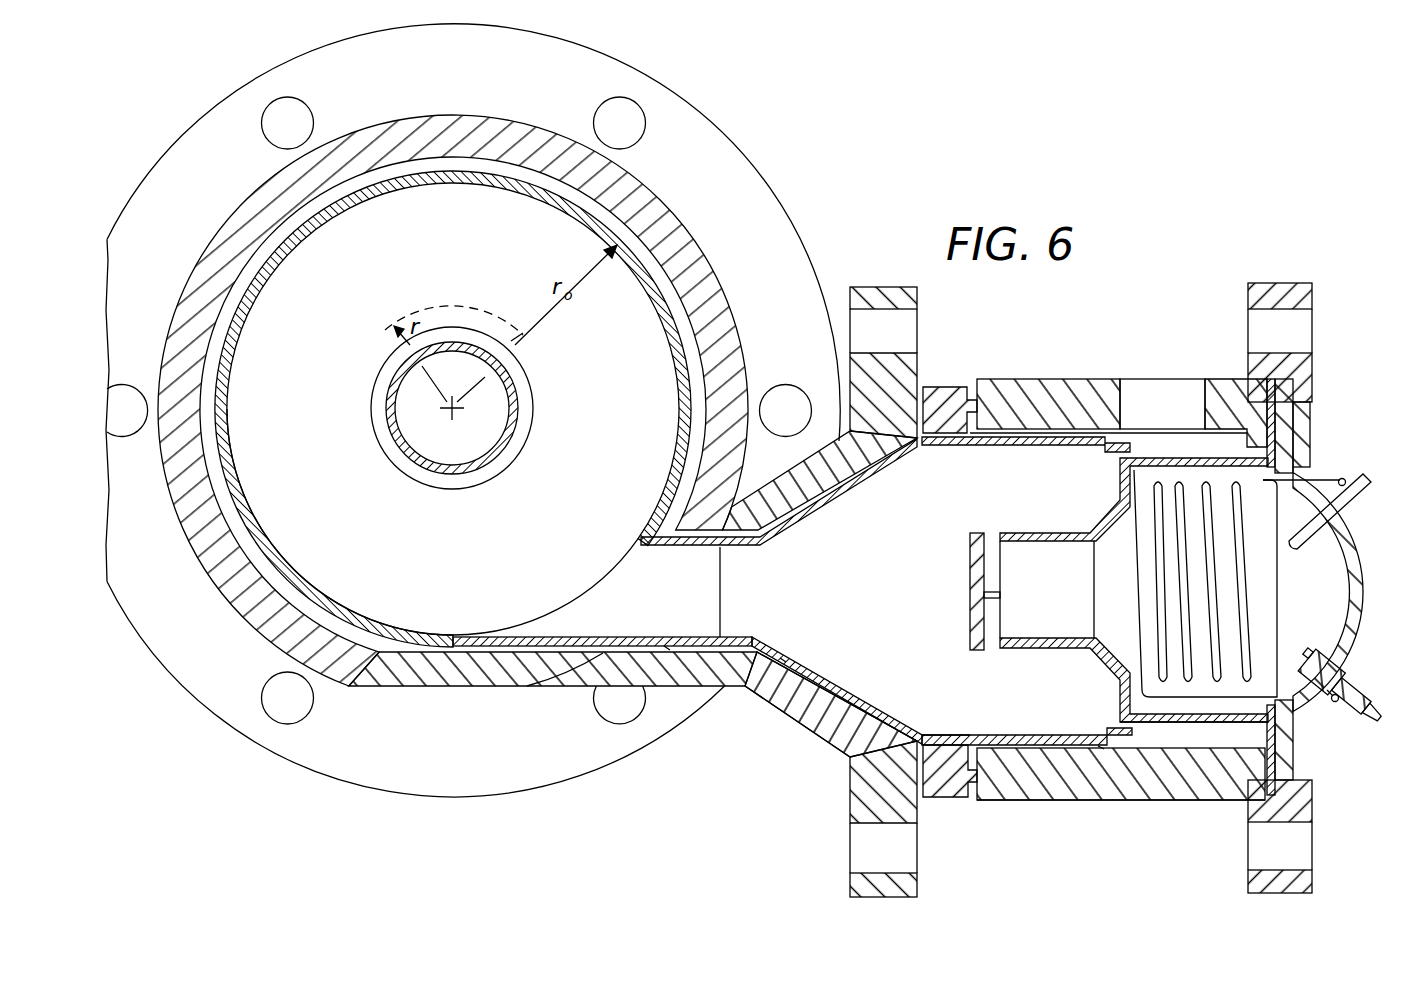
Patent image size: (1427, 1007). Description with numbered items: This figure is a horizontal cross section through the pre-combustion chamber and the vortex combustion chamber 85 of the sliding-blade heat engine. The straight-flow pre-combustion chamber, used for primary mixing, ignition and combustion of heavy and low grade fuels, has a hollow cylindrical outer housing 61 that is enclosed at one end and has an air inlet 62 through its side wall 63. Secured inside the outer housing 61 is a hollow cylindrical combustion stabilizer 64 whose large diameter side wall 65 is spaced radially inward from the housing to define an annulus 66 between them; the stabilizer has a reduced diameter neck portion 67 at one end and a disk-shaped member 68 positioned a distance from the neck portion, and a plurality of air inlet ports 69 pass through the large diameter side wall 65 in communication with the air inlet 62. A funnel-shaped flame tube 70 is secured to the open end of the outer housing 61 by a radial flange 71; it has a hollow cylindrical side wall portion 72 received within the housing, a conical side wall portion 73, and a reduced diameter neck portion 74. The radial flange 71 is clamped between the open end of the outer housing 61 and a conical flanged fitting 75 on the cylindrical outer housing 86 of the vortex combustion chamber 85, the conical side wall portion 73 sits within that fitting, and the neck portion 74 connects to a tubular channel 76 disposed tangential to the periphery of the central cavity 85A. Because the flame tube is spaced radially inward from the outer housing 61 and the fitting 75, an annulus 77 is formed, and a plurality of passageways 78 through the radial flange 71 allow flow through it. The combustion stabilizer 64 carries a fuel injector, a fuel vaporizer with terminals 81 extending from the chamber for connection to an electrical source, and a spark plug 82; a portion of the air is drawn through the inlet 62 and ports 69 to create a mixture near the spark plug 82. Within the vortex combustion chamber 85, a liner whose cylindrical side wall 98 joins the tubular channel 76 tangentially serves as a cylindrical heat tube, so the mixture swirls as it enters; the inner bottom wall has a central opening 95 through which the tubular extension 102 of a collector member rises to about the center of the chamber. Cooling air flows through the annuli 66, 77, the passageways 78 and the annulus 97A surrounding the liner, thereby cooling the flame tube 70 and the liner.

The outer housing 61 is at (1040, 379).
The air inlet 62 is at (1148, 388).
The side wall 63 is at (1082, 379).
The combustion stabilizer 64 is at (1104, 658).
The large diameter side wall 65 is at (1203, 720).
The annulus 66 is at (1162, 740).
The reduced diameter neck portion 67 is at (1065, 533).
The disk-shaped member 68 is at (976, 650).
The air inlet ports 69 is at (1205, 462).
The funnel-shaped flame tube 70 is at (1008, 752).
The radial flange 71 is at (940, 797).
The cylindrical side wall portion 72 is at (1060, 738).
The conical side wall portion 73 is at (814, 662).
The reduced diameter neck portion 74 is at (746, 548).
The conical flanged fitting 75 is at (810, 733).
The tubular channel 76 is at (620, 637).
The annulus 77 is at (667, 648).
The passageways 78 is at (940, 428).
The terminals 81 is at (1345, 481).
The spark plug 82 is at (1350, 690).
The vortex combustion chamber 85 is at (749, 135).
The central cavity 85A is at (470, 575).
The cylindrical outer housing 86 is at (483, 118).
The central opening 95 is at (524, 426).
The annulus 97A is at (310, 612).
The cylindrical side wall 98 is at (226, 400).
The tubular extension 102 is at (518, 381).